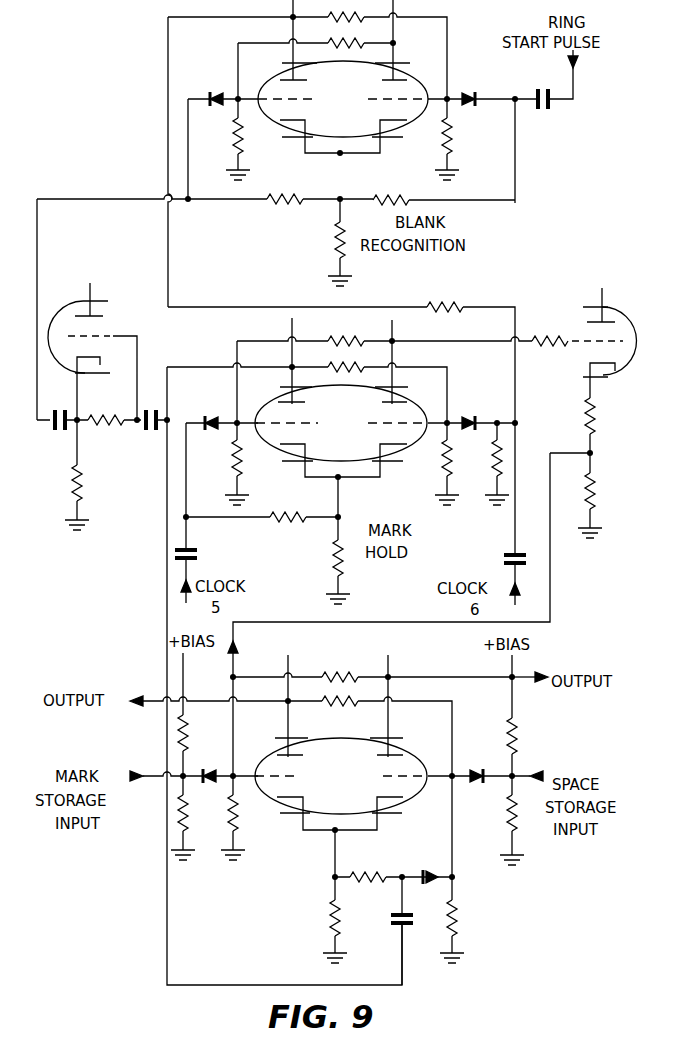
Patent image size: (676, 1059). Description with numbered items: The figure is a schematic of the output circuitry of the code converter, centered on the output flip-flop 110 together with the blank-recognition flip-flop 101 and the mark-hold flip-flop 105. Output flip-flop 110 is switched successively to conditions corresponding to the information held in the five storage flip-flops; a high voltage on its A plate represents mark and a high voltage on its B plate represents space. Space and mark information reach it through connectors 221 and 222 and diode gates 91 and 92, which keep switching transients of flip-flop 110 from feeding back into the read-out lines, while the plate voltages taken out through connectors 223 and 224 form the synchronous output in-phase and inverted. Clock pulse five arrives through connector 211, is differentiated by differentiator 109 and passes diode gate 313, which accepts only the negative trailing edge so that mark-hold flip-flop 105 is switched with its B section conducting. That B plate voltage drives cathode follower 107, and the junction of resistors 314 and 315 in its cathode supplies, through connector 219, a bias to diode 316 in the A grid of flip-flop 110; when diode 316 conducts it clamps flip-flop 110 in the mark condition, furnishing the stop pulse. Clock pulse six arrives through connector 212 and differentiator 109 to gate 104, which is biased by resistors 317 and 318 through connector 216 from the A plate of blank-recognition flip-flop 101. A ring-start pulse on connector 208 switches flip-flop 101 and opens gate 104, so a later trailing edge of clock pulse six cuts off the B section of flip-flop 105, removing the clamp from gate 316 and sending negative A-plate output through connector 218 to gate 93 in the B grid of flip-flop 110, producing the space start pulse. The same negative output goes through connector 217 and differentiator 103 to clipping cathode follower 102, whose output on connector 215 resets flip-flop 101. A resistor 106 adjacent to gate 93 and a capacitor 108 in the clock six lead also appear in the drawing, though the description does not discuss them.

The diode gate 91 is at (483, 770).
The diode gate 92 is at (206, 770).
The gate 93 is at (428, 865).
The blank-recognition flip-flop 101 is at (360, 110).
The clipping cathode follower 102 is at (147, 331).
The differentiator 103 is at (123, 458).
The gate 104 is at (468, 418).
The mark-hold flip-flop 105 is at (359, 435).
The resistor 106 is at (388, 911).
The cathode follower 107 is at (590, 304).
The clock coupling capacitor 108 is at (512, 553).
The differentiator 109 is at (253, 546).
The output flip-flop 110 is at (359, 802).
The connector 208 is at (575, 88).
The connector 211 is at (184, 573).
The connector 212 is at (518, 589).
The connector 215 is at (38, 246).
The connector 216 is at (164, 122).
The connector 217 is at (164, 430).
The connector 218 is at (198, 367).
The connector 219 is at (551, 606).
The connector 221 is at (532, 773).
The connector 222 is at (148, 772).
The connector 223 is at (147, 687).
The connector 224 is at (522, 680).
The diode gate 313 is at (213, 406).
The resistor 314 is at (583, 421).
The resistor 315 is at (594, 495).
The diode 316 is at (242, 641).
The resistor 317 is at (446, 292).
The resistor 318 is at (460, 464).